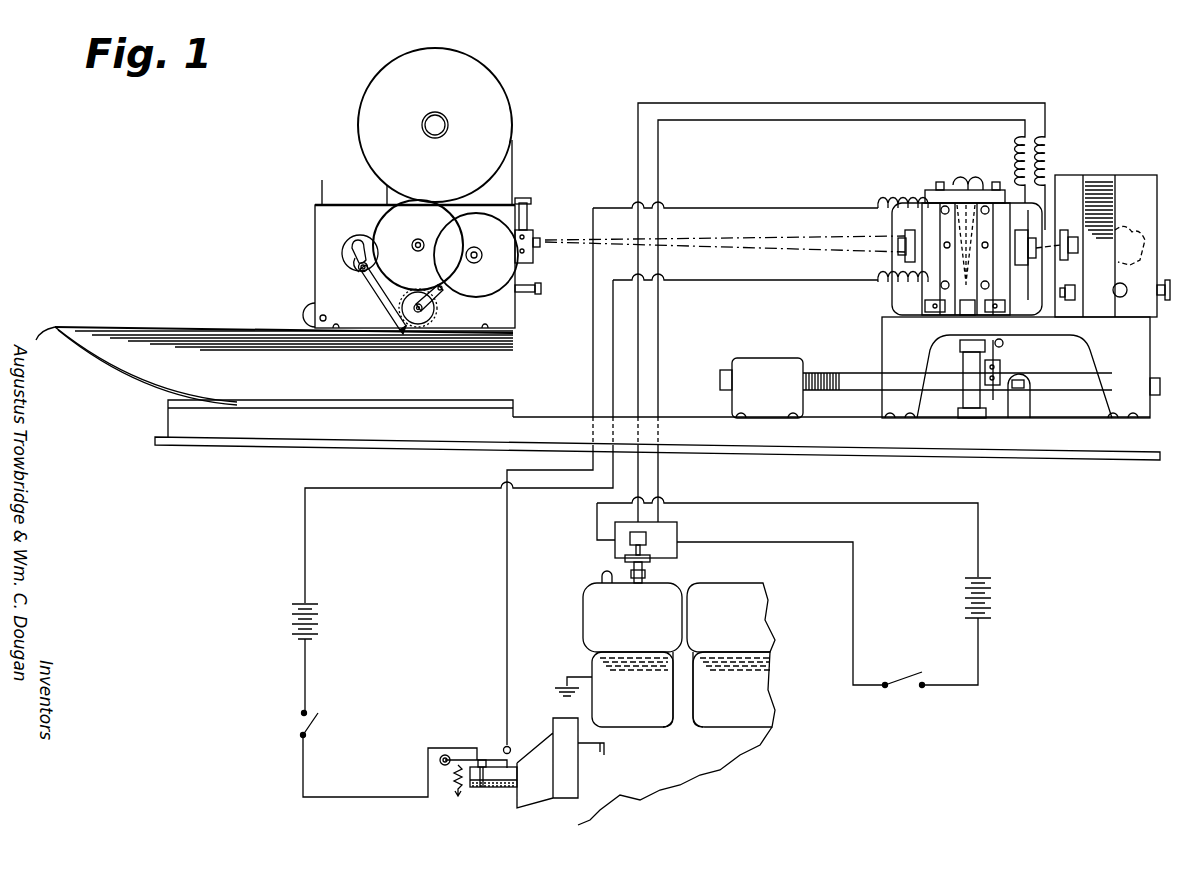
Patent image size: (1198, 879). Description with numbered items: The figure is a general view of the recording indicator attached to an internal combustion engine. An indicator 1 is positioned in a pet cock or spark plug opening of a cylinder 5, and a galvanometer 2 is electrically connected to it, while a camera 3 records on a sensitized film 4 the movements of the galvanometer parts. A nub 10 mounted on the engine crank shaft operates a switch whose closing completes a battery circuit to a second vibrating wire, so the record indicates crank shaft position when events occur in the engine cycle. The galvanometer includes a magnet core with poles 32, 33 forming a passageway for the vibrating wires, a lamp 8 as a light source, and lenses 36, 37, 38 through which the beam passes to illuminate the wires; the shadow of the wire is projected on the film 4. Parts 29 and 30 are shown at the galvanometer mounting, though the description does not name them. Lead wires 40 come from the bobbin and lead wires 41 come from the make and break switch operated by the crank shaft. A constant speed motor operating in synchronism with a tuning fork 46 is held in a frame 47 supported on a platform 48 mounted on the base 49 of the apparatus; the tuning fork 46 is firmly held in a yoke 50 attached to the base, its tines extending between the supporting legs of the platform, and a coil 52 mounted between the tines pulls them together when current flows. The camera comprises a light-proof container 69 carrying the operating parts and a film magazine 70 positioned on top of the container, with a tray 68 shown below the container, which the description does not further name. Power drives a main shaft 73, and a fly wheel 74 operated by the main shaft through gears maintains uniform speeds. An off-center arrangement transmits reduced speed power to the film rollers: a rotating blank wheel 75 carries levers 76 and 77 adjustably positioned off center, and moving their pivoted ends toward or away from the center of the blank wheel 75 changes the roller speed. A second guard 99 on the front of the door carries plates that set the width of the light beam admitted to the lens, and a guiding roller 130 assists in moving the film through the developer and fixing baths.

The indicator 1 is at (655, 559).
The galvanometer 2 is at (1063, 147).
The camera 3 is at (405, 172).
The film 4 is at (34, 329).
The cylinder 5 is at (592, 617).
The lamp 8 is at (1140, 246).
The nub 10 is at (485, 795).
The brush holders 29 is at (978, 170).
The motor frame 30 is at (926, 192).
The pole 32 is at (940, 258).
The pole 33 is at (1003, 277).
The lens 36 is at (1057, 229).
The lens 37 is at (1021, 244).
The lens 38 is at (905, 236).
The lead wires 40 is at (785, 120).
The lead wires 41 is at (796, 214).
The tuning fork 46 is at (1062, 381).
The frame 47 is at (1143, 179).
The platform 48 is at (1140, 359).
The base 49 is at (563, 398).
The yoke 50 is at (780, 363).
The coil 52 is at (1034, 413).
The tray 68 is at (503, 378).
The light-proof container 69 is at (322, 257).
The film magazine 70 is at (495, 110).
The main shaft 73 is at (418, 245).
The fly wheel 74 is at (469, 292).
The blank wheel 75 is at (362, 238).
The lever 76 is at (366, 283).
The lever 77 is at (381, 292).
The second guard 99 is at (534, 233).
The guiding roller 130 is at (302, 313).